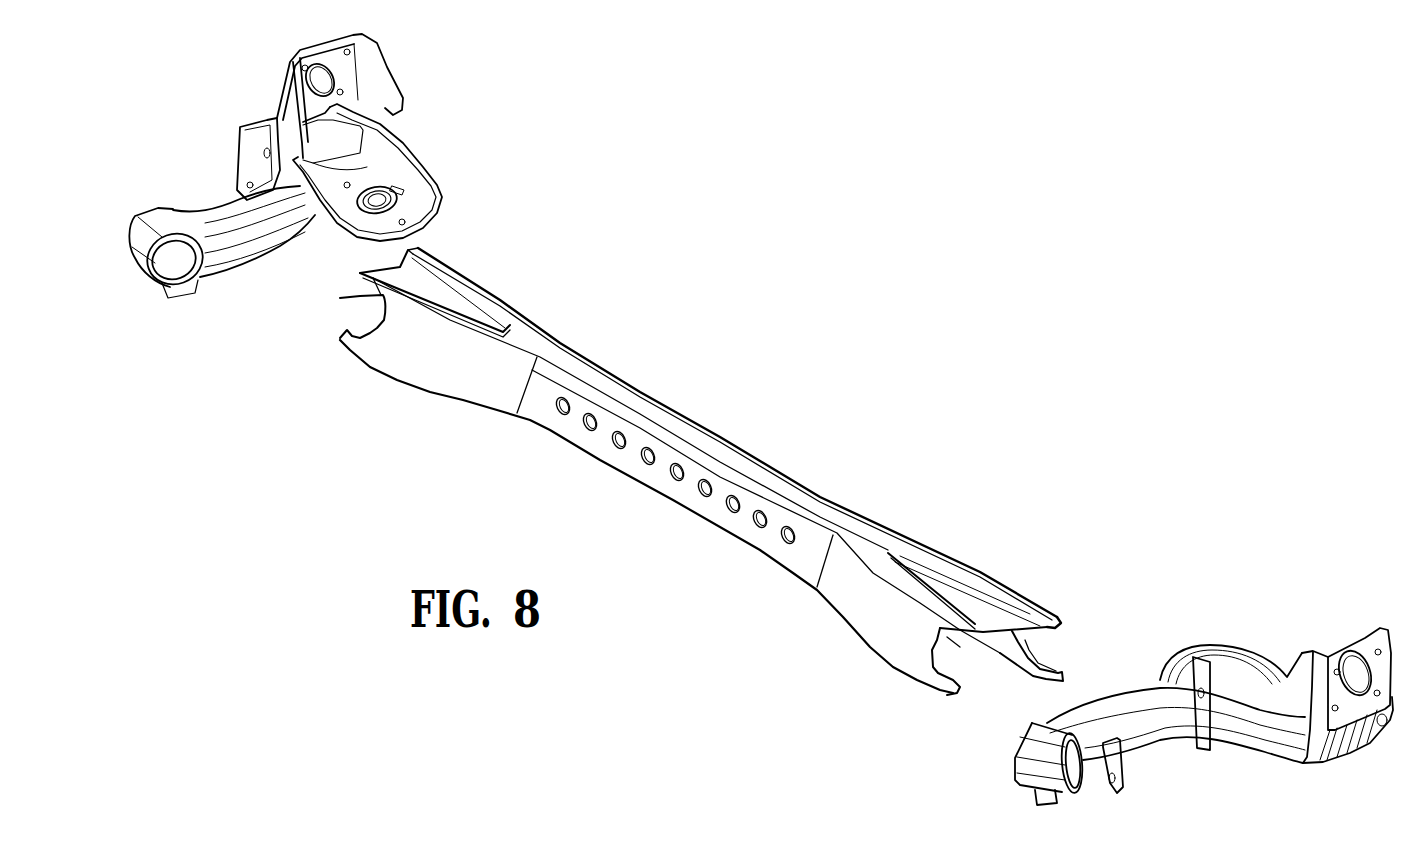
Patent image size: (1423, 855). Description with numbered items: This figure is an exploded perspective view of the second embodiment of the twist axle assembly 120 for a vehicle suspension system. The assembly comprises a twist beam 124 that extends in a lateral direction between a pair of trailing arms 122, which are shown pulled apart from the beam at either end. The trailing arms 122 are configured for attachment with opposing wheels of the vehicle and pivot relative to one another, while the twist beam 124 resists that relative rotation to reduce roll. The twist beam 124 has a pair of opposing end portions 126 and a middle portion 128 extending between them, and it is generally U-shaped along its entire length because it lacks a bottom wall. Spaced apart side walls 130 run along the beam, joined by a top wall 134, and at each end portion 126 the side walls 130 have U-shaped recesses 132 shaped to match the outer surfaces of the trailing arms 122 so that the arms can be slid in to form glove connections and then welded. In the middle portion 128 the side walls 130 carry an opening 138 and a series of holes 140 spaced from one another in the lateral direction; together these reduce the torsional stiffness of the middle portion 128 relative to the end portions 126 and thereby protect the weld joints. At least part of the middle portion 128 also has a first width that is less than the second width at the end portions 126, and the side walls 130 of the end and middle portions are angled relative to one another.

The twist axle assembly 120 is at (748, 345).
The trailing arm 122 is at (368, 64).
The twist beam 124 is at (825, 447).
The end portion 126 is at (458, 271).
The middle portion 128 is at (750, 451).
The side wall 130 is at (425, 369).
The U-shaped recess 132 is at (377, 298).
The top wall 134 is at (632, 402).
The opening 138 is at (631, 472).
The hole 140 is at (587, 423).